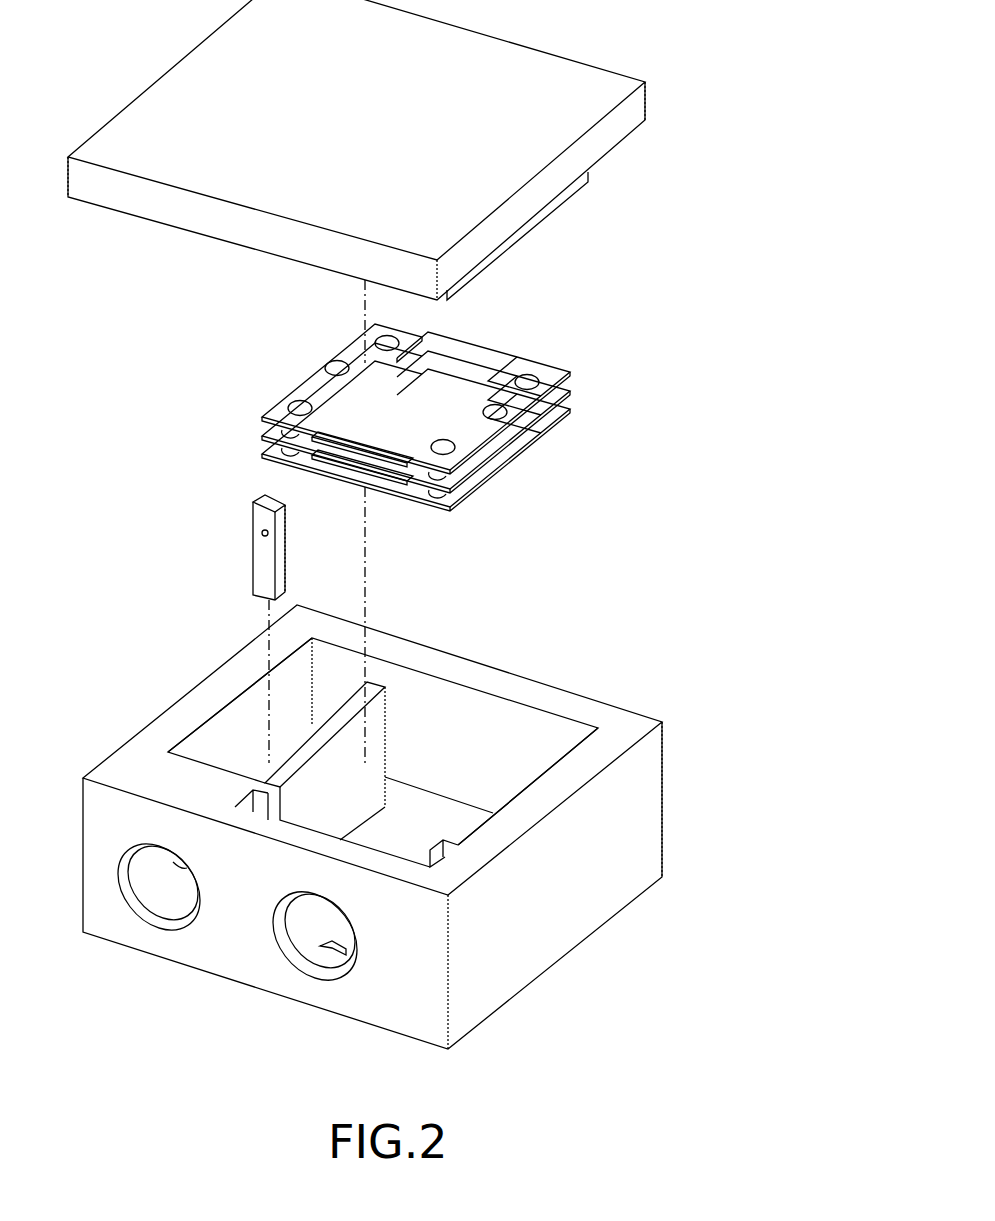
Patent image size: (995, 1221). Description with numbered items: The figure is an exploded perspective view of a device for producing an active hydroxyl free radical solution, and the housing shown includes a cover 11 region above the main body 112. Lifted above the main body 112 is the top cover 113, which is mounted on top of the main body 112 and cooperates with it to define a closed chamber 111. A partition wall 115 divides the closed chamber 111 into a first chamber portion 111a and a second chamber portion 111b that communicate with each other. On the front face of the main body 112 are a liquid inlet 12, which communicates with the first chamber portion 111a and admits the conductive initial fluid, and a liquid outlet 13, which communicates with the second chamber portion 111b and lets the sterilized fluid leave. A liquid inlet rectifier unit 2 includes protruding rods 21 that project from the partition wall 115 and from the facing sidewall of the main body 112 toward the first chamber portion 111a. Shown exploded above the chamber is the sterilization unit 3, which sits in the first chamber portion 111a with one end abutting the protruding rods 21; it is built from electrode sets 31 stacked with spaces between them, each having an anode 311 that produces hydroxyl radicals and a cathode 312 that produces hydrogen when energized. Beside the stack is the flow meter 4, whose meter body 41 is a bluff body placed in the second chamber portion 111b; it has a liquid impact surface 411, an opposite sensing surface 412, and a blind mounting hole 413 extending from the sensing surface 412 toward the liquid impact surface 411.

The cover 11 is at (393, 150).
The top cover 113 is at (621, 128).
The sterilization unit 3 is at (476, 410).
The electrode set 31 is at (476, 410).
The anode 311 is at (472, 350).
The cathode 312 is at (548, 380).
The flow meter 4 is at (359, 577).
The meter body 41 is at (359, 607).
The liquid impact surface 411 is at (265, 496).
The sensing surface 412 is at (265, 568).
The mounting hole 413 is at (268, 533).
The main body 112 is at (415, 823).
The closed chamber 111 is at (429, 728).
The first chamber portion 111a is at (558, 746).
The second chamber portion 111b is at (257, 693).
The partition wall 115 is at (292, 751).
The liquid inlet rectifier unit 2 is at (582, 838).
The protruding rod 21 is at (424, 827).
The liquid inlet 12 is at (312, 968).
The liquid outlet 13 is at (157, 921).